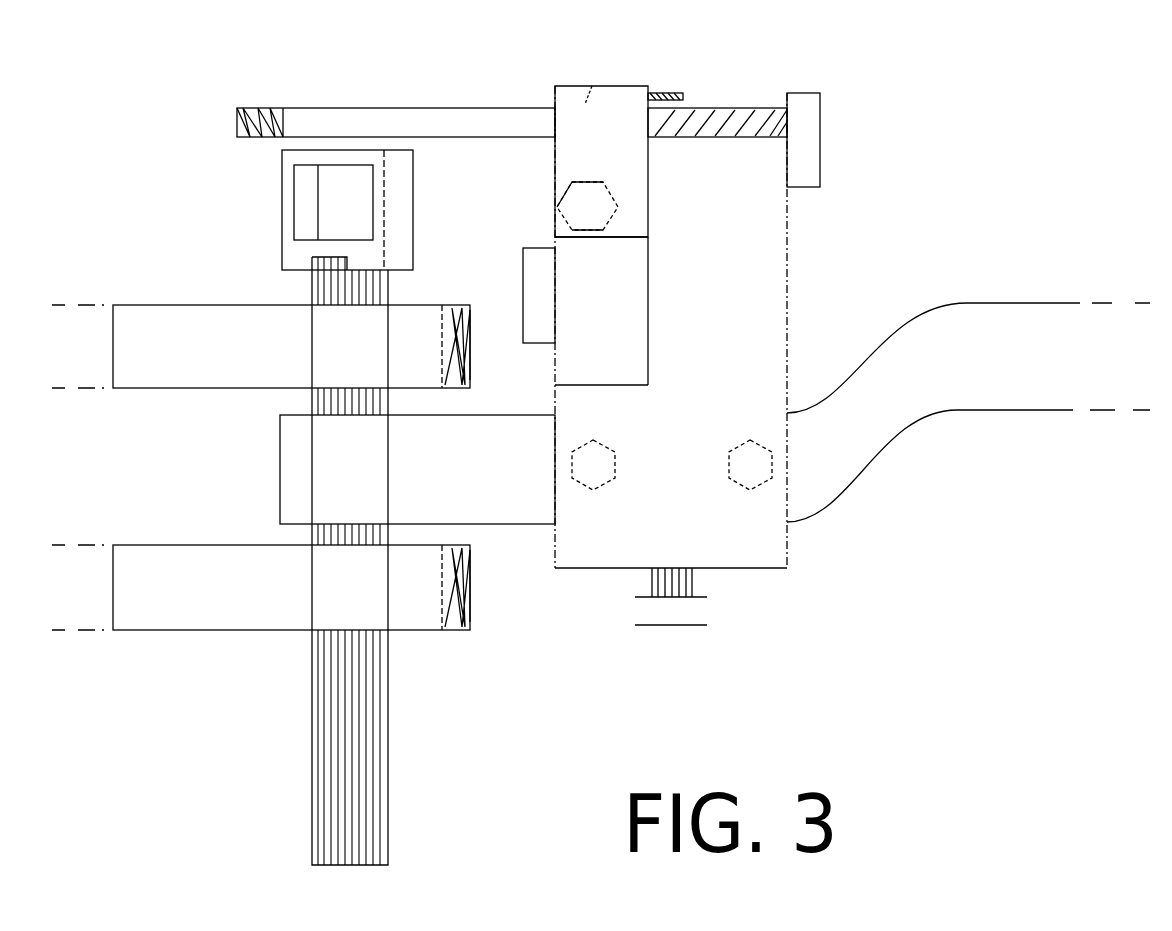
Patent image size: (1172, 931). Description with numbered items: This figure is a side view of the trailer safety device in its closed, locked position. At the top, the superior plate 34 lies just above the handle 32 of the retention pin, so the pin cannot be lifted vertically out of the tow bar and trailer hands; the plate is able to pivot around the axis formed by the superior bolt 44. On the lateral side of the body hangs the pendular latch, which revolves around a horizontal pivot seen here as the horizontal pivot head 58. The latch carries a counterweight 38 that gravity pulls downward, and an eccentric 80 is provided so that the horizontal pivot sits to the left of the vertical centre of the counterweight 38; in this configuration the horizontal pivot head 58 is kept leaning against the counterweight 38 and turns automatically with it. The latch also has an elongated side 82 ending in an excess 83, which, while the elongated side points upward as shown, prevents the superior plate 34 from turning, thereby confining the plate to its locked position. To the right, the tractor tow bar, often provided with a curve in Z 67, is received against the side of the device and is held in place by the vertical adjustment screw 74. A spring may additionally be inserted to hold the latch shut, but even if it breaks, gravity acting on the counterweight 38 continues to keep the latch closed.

The superior plate 34 is at (312, 108).
The handle 32 is at (282, 223).
The elongated side 82 is at (592, 90).
The excess 83 is at (583, 103).
The superior bolt 44 is at (613, 72).
The horizontal pivot head 58 is at (580, 203).
The eccentric 80 is at (630, 212).
The counterweight 38 is at (630, 342).
The curve in Z 67 is at (875, 457).
The vertical adjustment screw 74 is at (697, 612).